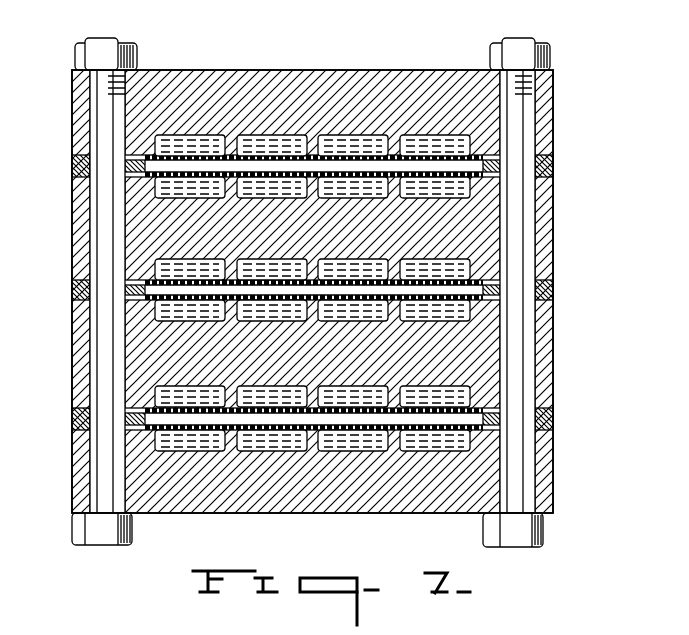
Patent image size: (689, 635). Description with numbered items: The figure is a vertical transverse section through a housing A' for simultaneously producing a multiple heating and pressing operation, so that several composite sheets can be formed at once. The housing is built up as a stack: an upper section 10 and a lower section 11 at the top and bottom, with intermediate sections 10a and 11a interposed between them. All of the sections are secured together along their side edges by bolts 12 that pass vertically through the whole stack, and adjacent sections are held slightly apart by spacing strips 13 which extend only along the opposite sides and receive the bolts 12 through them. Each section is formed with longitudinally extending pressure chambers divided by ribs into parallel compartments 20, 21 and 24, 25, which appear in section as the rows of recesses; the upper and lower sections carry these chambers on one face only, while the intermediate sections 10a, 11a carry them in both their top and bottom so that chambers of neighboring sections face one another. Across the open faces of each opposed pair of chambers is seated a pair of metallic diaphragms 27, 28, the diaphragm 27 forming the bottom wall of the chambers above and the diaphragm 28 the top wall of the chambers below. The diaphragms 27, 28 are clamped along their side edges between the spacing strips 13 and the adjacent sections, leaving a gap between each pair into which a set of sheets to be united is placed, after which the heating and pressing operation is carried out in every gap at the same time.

The upper section 10 is at (422, 86).
The intermediate section 10a is at (470, 216).
The lower section 11 is at (428, 495).
The intermediate section 11a is at (470, 362).
The bolts 12 is at (100, 206).
The spacing strips 13 is at (72, 412).
The compartment 20 is at (173, 147).
The compartment 21 is at (265, 148).
The compartment 24 is at (345, 148).
The compartment 25 is at (437, 145).
The diaphragm 27 is at (192, 157).
The diaphragm 28 is at (160, 188).
The housing A' is at (579, 210).